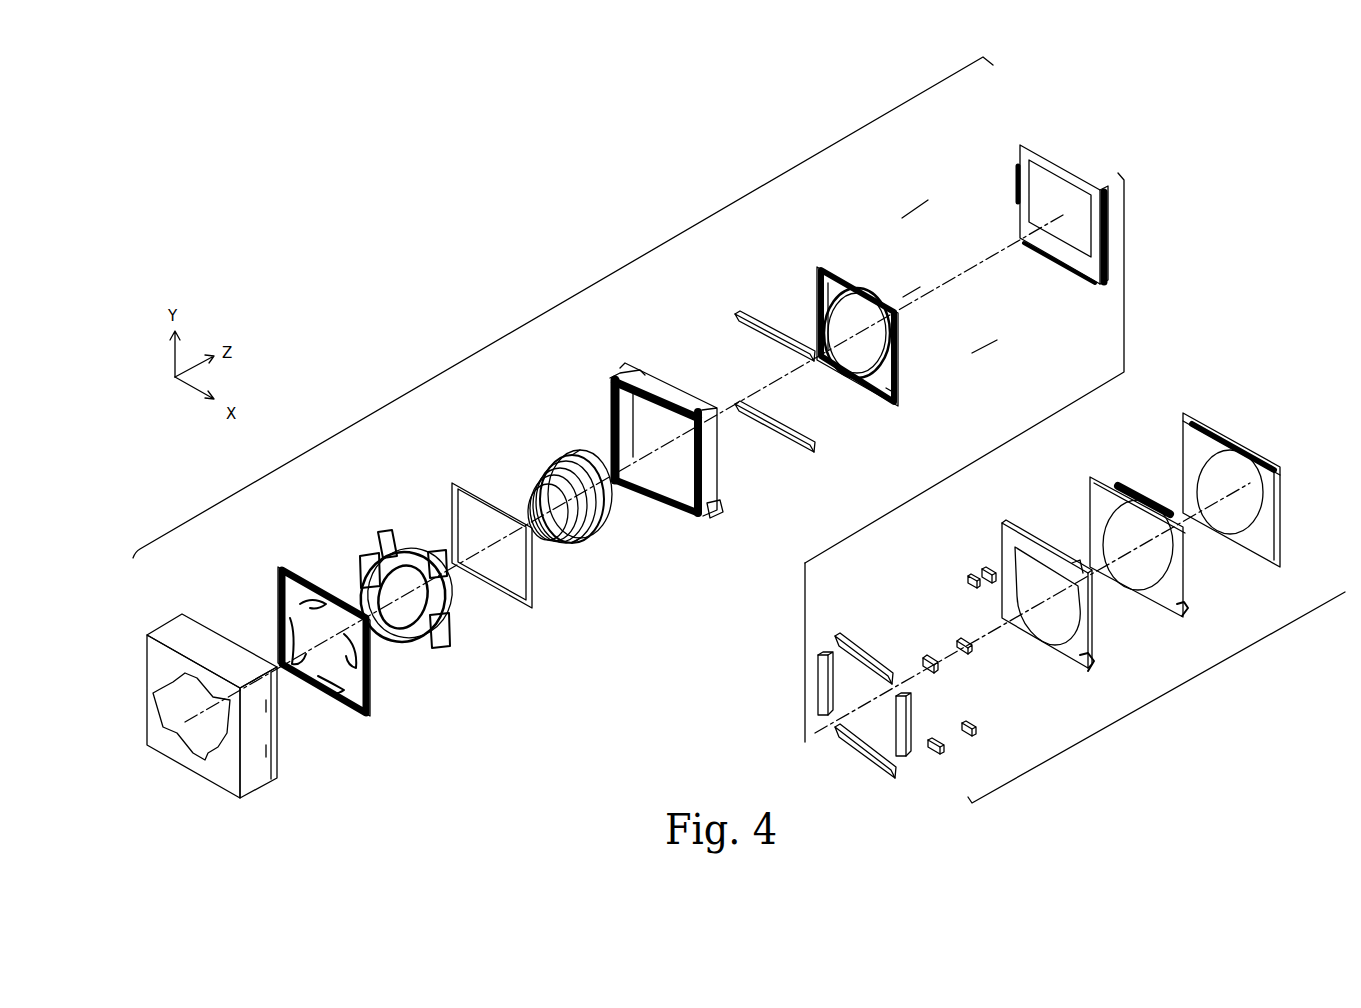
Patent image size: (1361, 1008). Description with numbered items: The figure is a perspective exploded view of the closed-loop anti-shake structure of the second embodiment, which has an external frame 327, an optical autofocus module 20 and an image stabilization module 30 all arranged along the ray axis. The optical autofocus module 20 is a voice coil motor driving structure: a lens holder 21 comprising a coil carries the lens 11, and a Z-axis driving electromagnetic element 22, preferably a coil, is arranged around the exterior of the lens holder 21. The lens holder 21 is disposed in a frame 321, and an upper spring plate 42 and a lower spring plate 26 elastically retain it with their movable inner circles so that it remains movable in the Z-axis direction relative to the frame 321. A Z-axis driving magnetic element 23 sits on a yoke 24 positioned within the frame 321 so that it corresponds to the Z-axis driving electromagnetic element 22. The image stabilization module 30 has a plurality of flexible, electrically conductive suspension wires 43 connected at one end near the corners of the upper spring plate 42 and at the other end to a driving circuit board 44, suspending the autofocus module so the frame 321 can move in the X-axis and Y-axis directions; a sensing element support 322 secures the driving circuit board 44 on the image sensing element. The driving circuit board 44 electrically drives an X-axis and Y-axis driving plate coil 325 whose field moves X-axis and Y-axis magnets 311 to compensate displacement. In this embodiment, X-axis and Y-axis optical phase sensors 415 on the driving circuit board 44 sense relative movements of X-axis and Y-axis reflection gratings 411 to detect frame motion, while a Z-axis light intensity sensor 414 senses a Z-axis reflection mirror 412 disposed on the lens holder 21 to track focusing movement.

The lens 11 is at (566, 450).
The optical autofocus module 20 is at (562, 306).
The lens holder 21 is at (388, 537).
The Z-axis driving electromagnetic element 22 is at (460, 483).
The Z-axis driving magnetic element 23 is at (742, 317).
The yoke 24 is at (1020, 145).
The lower spring plate 26 is at (817, 268).
The image stabilization module 30 is at (1163, 697).
The upper spring plate 42 is at (278, 566).
The suspension wires 43 is at (915, 202).
The driving circuit board 44 is at (1187, 613).
The X-axis and Y-axis magnets 311 is at (843, 637).
The frame 321 is at (630, 363).
The sensing element support 322 is at (1280, 560).
The X-axis and Y-axis driving plate coil 325 is at (1097, 650).
The external frame 327 is at (192, 628).
The X-axis and Y-axis reflection gratings 411 is at (945, 748).
The Z-axis reflection mirror 412 is at (972, 580).
The Z-axis light intensity sensor 414 is at (985, 575).
The X-axis and Y-axis optical phase sensors 415 is at (977, 730).